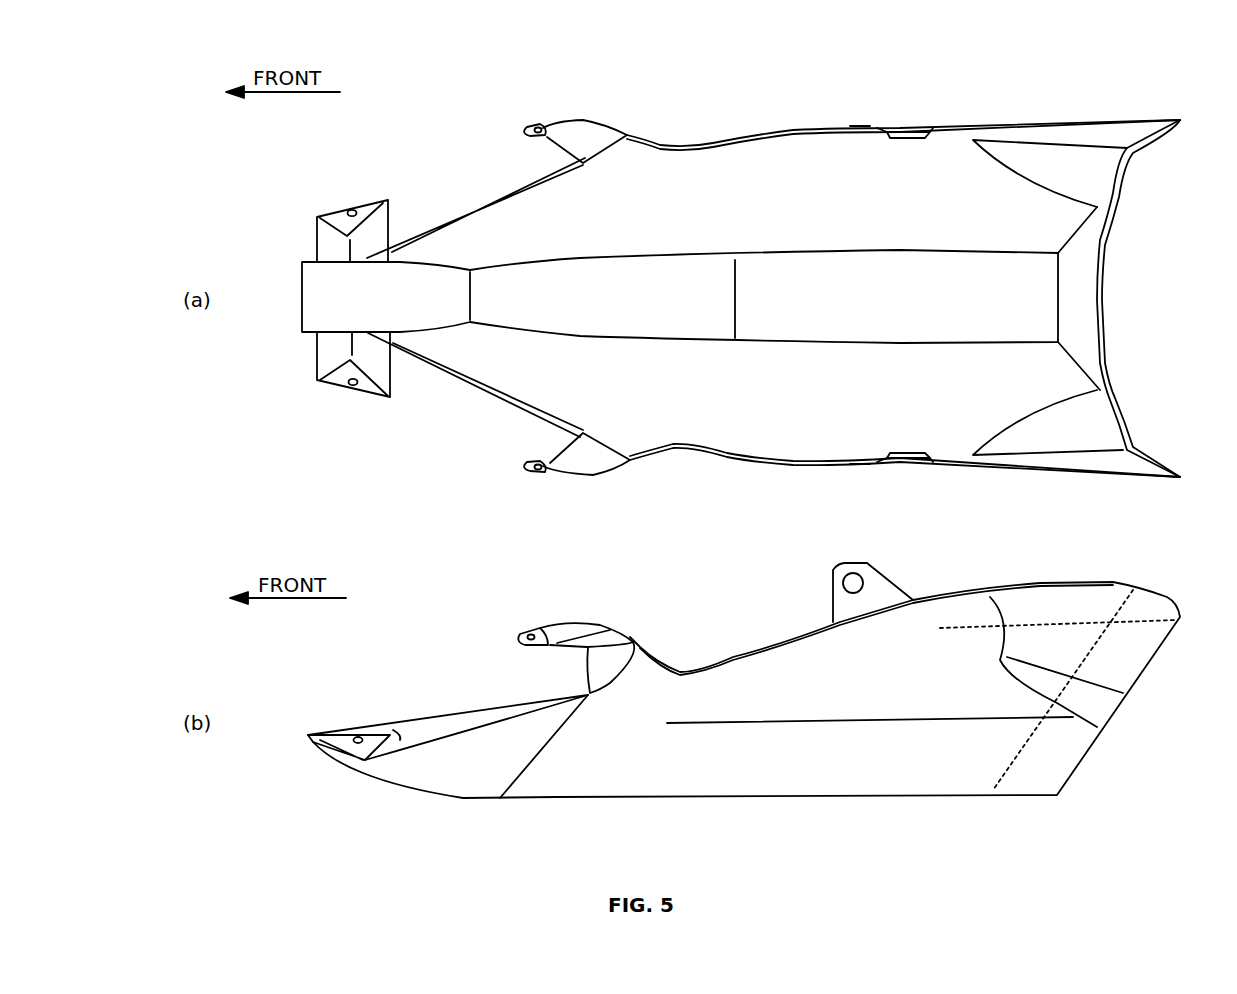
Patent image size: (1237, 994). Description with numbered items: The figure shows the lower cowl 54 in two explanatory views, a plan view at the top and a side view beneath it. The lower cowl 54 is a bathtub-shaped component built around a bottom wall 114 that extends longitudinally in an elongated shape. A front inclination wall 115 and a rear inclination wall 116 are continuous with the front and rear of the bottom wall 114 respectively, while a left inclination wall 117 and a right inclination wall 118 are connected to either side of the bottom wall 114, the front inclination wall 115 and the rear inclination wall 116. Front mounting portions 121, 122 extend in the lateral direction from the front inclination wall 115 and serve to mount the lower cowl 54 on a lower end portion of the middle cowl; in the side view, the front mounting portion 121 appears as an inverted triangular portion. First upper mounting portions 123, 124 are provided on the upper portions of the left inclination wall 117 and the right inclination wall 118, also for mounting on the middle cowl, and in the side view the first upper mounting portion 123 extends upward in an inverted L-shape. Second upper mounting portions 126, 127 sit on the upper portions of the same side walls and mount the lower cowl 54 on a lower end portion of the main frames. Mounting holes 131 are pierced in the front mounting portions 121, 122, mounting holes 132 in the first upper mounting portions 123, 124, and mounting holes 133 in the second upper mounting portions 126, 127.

The lower cowl 54 is at (423, 119).
The bottom wall 114 is at (733, 270).
The front inclination wall 115 is at (317, 290).
The rear inclination wall 116 is at (1083, 303).
The left inclination wall 117 is at (798, 447).
The right inclination wall 118 is at (790, 148).
The front mounting portion 121 is at (313, 360).
The front mounting portion 122 is at (323, 238).
The first upper mounting portion 123 is at (600, 462).
The first upper mounting portion 124 is at (605, 132).
The second upper mounting portion 126 is at (902, 470).
The second upper mounting portion 127 is at (893, 122).
The mounting hole 131 is at (348, 207).
The mounting hole 132 is at (543, 128).
The mounting hole 133 is at (860, 127).